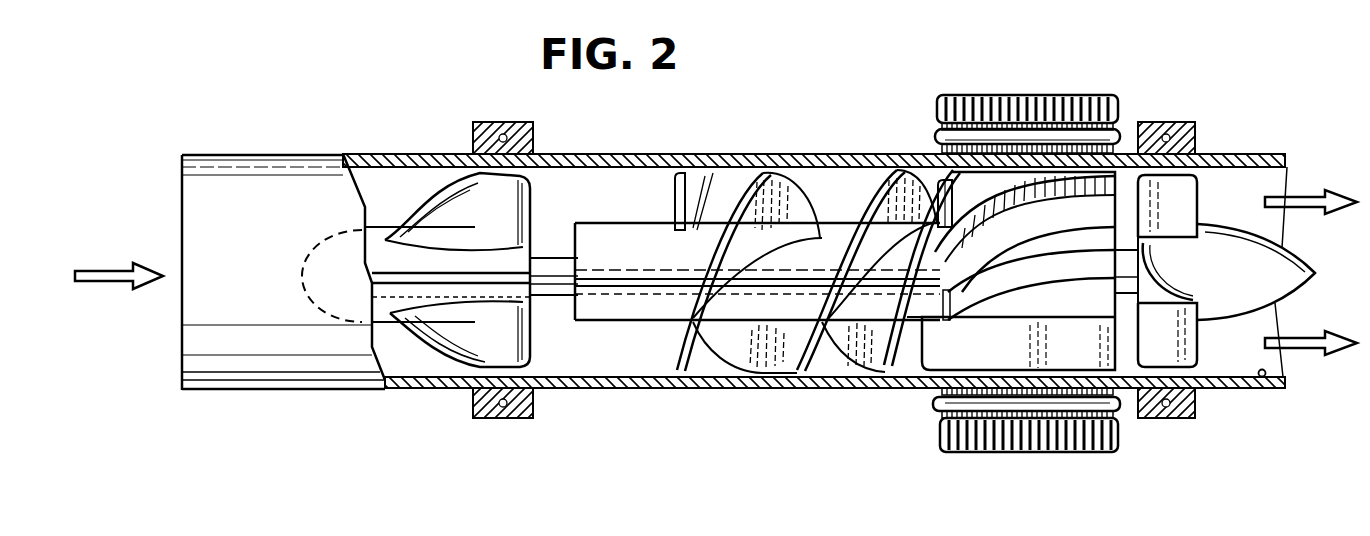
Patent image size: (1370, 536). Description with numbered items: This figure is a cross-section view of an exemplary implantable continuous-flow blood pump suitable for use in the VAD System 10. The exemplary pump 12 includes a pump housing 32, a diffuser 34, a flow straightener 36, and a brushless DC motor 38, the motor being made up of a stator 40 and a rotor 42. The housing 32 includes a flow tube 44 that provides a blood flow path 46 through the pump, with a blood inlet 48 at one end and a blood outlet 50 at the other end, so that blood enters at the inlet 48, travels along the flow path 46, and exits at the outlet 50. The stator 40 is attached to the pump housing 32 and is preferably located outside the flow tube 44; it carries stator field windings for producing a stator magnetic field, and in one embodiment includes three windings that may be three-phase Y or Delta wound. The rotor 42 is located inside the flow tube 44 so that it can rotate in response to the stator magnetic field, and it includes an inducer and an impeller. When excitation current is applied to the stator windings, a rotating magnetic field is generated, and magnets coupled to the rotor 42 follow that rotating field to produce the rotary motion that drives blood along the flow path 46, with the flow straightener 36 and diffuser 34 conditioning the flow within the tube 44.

The VAD System 10 is at (1017, 535).
The pump 12 is at (423, 125).
The pump housing 32 is at (241, 394).
The diffuser 34 is at (1228, 288).
The flow straightener 36 is at (507, 277).
The brushless DC motor 38 is at (1117, 92).
The stator 40 is at (1086, 94).
The rotor 42 is at (828, 250).
The flow tube 44 is at (275, 225).
The blood flow path 46 is at (1283, 247).
The blood inlet 48 is at (181, 207).
The blood outlet 50 is at (1266, 382).